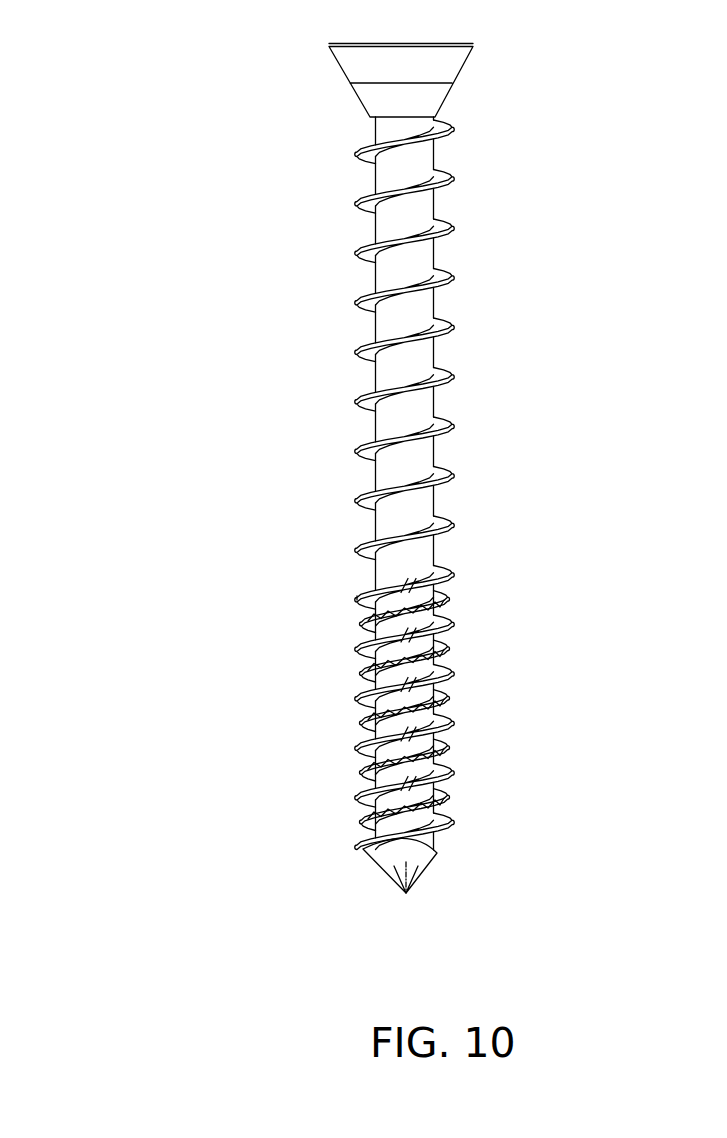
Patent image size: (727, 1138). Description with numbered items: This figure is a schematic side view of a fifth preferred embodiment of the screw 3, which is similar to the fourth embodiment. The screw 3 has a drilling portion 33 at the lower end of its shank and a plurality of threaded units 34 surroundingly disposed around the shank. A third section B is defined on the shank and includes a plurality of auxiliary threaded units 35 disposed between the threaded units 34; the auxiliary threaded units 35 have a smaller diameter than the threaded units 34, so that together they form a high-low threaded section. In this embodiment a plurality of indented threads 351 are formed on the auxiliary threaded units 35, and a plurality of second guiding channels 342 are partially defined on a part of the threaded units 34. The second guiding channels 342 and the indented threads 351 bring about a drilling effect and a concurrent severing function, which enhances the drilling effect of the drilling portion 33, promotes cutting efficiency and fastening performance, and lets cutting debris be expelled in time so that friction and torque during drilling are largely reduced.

The screw 3 is at (130, 113).
The threaded units 34 is at (293, 121).
The second guiding channels 342 is at (404, 590).
The auxiliary threaded units 35 is at (438, 648).
The indented threads 351 is at (440, 700).
The drilling portion 33 is at (457, 857).
The third section B is at (360, 590).